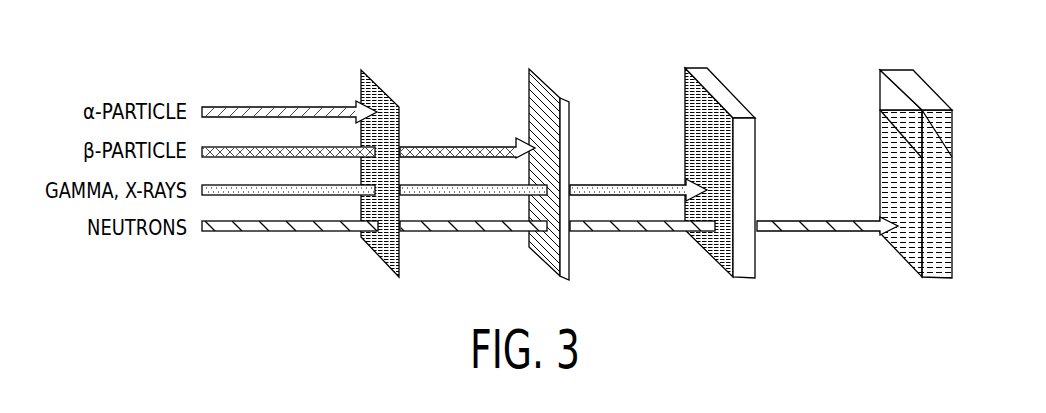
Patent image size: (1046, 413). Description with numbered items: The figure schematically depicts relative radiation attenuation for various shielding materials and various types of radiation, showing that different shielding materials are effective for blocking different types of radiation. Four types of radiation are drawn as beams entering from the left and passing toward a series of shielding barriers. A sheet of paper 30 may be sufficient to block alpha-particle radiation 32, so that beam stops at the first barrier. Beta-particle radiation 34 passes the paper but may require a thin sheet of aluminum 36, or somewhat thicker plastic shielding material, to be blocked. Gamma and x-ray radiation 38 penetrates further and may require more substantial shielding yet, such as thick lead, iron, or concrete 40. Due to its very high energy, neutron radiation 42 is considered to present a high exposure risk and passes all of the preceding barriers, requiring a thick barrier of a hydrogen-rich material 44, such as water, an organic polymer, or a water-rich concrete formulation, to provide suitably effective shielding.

The sheet of paper 30 is at (366, 68).
The alpha-particle radiation 32 is at (220, 105).
The beta-particle radiation 34 is at (284, 146).
The thin sheet of aluminum 36 is at (530, 68).
The gamma and x-ray radiation 38 is at (247, 194).
The thick lead, iron, or concrete 40 is at (698, 68).
The neutron radiation 42 is at (330, 233).
The thick barrier of hydrogen-rich material 44 is at (897, 68).